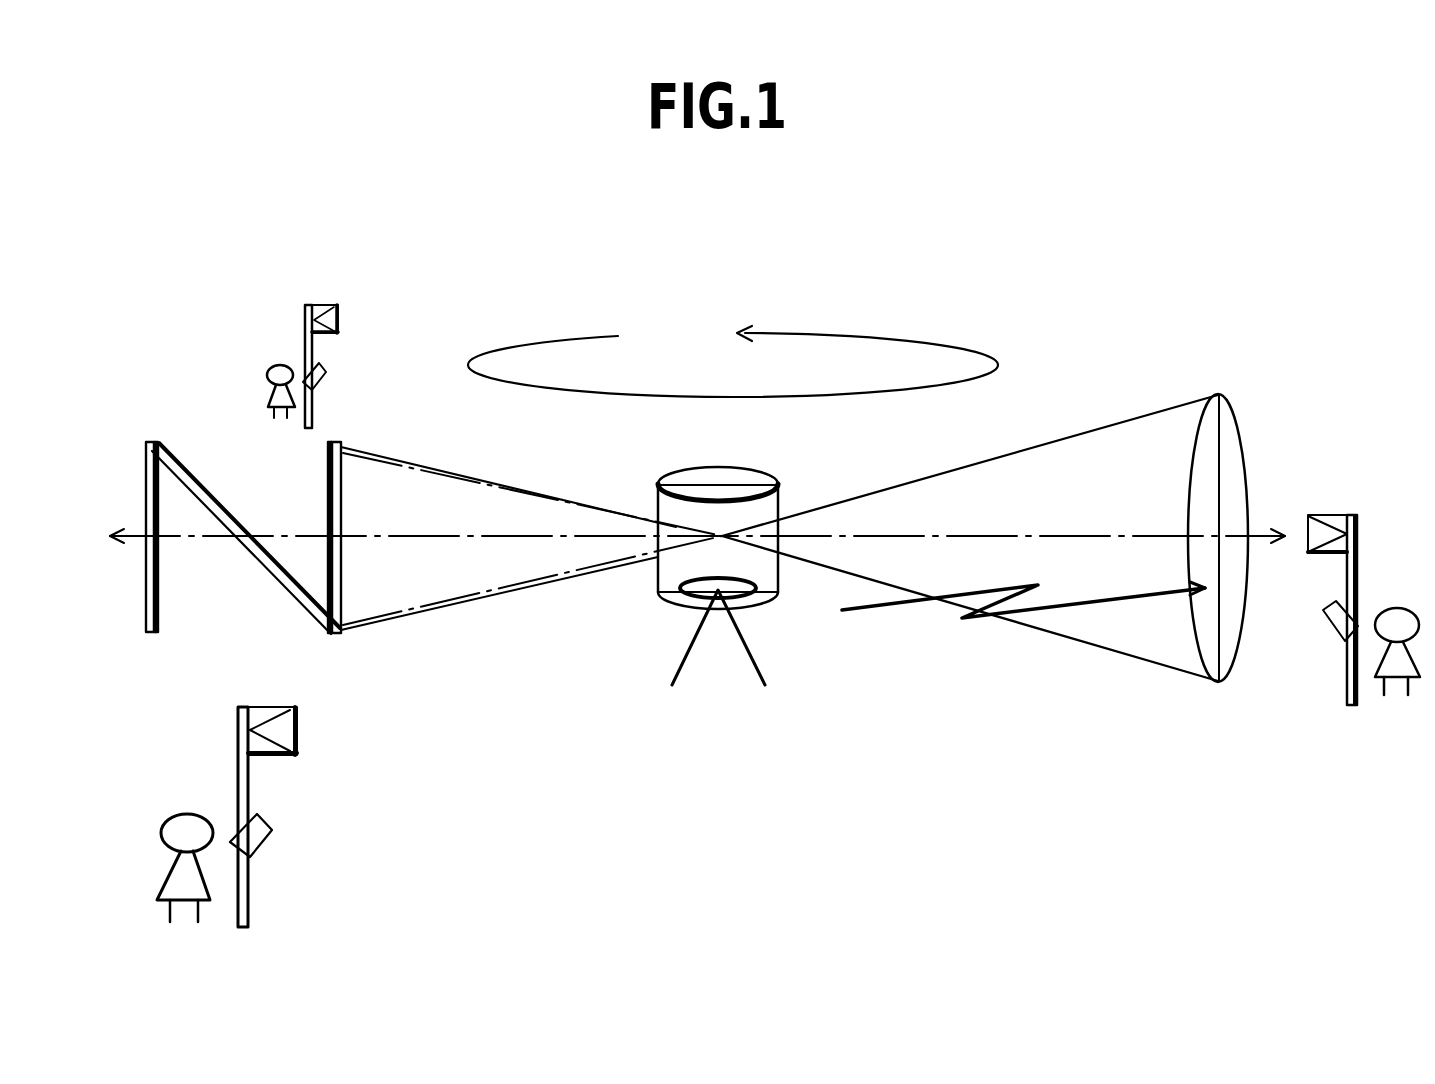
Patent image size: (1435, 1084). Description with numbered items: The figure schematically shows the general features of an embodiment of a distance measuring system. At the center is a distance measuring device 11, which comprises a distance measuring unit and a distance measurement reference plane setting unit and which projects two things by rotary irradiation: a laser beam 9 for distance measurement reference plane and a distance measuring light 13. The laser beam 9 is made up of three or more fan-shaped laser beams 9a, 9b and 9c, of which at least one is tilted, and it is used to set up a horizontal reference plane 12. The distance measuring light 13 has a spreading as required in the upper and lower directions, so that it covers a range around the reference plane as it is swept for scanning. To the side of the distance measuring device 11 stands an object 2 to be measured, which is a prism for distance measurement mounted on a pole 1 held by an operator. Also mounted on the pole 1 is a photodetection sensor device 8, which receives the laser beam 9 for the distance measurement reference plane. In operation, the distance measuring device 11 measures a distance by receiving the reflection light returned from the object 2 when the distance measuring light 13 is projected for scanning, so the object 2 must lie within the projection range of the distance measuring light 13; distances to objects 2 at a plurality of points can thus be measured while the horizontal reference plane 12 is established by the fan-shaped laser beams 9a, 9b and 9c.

The pole 1 is at (1358, 525).
The object to be measured 2 is at (1330, 515).
The photodetection sensor device 8 is at (1328, 617).
The laser beam for distance measurement reference plane 9 is at (409, 502).
The fan-shaped laser beam 9a is at (183, 466).
The fan-shaped laser beam 9b is at (145, 590).
The fan-shaped laser beam 9c is at (341, 487).
The distance measuring device 11 is at (779, 483).
The horizontal reference plane 12 is at (1035, 533).
The distance measuring light 13 is at (1017, 448).